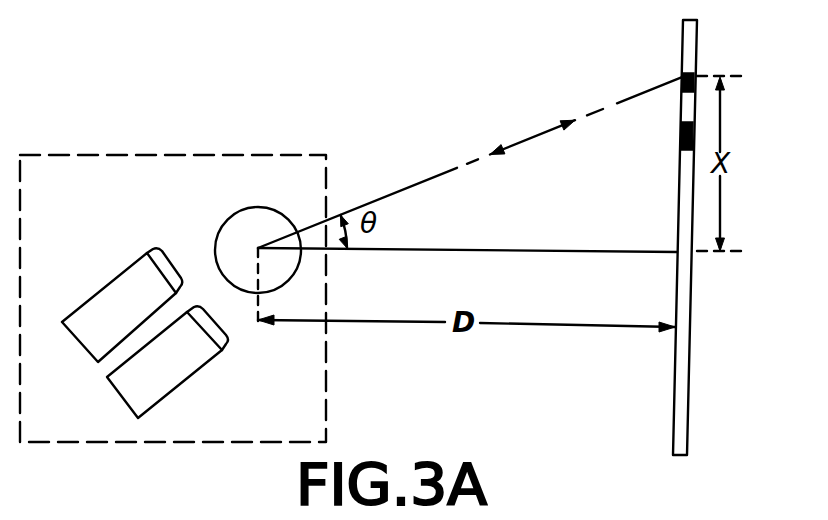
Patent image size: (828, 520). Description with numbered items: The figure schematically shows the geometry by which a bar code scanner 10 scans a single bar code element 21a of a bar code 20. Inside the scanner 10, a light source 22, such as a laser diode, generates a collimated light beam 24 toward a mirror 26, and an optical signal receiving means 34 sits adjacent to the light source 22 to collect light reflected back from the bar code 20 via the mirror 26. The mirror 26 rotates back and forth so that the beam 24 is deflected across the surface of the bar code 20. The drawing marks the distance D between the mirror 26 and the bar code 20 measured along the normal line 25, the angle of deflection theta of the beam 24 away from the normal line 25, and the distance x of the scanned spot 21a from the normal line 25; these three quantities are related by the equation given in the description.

The scanner 10 is at (155, 155).
The bar code 20 is at (697, 30).
The bar code element 21a is at (684, 77).
The light source 22 is at (123, 273).
The light beam 24 is at (428, 179).
The normal line 25 is at (465, 249).
The mirror 26 is at (240, 208).
The optical signal receiving means 34 is at (178, 372).